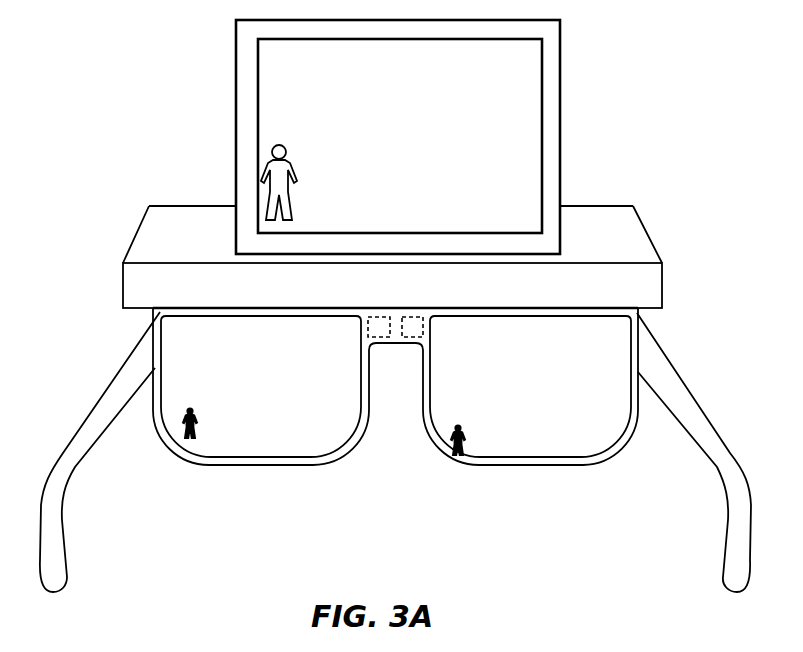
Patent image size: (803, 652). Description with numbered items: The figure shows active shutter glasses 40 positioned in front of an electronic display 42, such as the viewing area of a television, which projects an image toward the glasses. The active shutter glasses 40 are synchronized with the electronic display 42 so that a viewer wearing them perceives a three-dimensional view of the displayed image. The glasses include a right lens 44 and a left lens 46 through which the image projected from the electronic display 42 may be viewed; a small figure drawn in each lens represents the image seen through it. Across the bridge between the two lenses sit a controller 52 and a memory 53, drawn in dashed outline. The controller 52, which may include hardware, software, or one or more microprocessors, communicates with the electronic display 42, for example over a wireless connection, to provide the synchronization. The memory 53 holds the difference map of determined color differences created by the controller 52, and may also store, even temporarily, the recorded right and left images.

The active shutter glasses 40 is at (395, 399).
The electronic display 42 is at (520, 138).
The right lens 44 is at (530, 386).
The left lens 46 is at (261, 386).
The controller 52 is at (377, 340).
The memory 53 is at (410, 337).